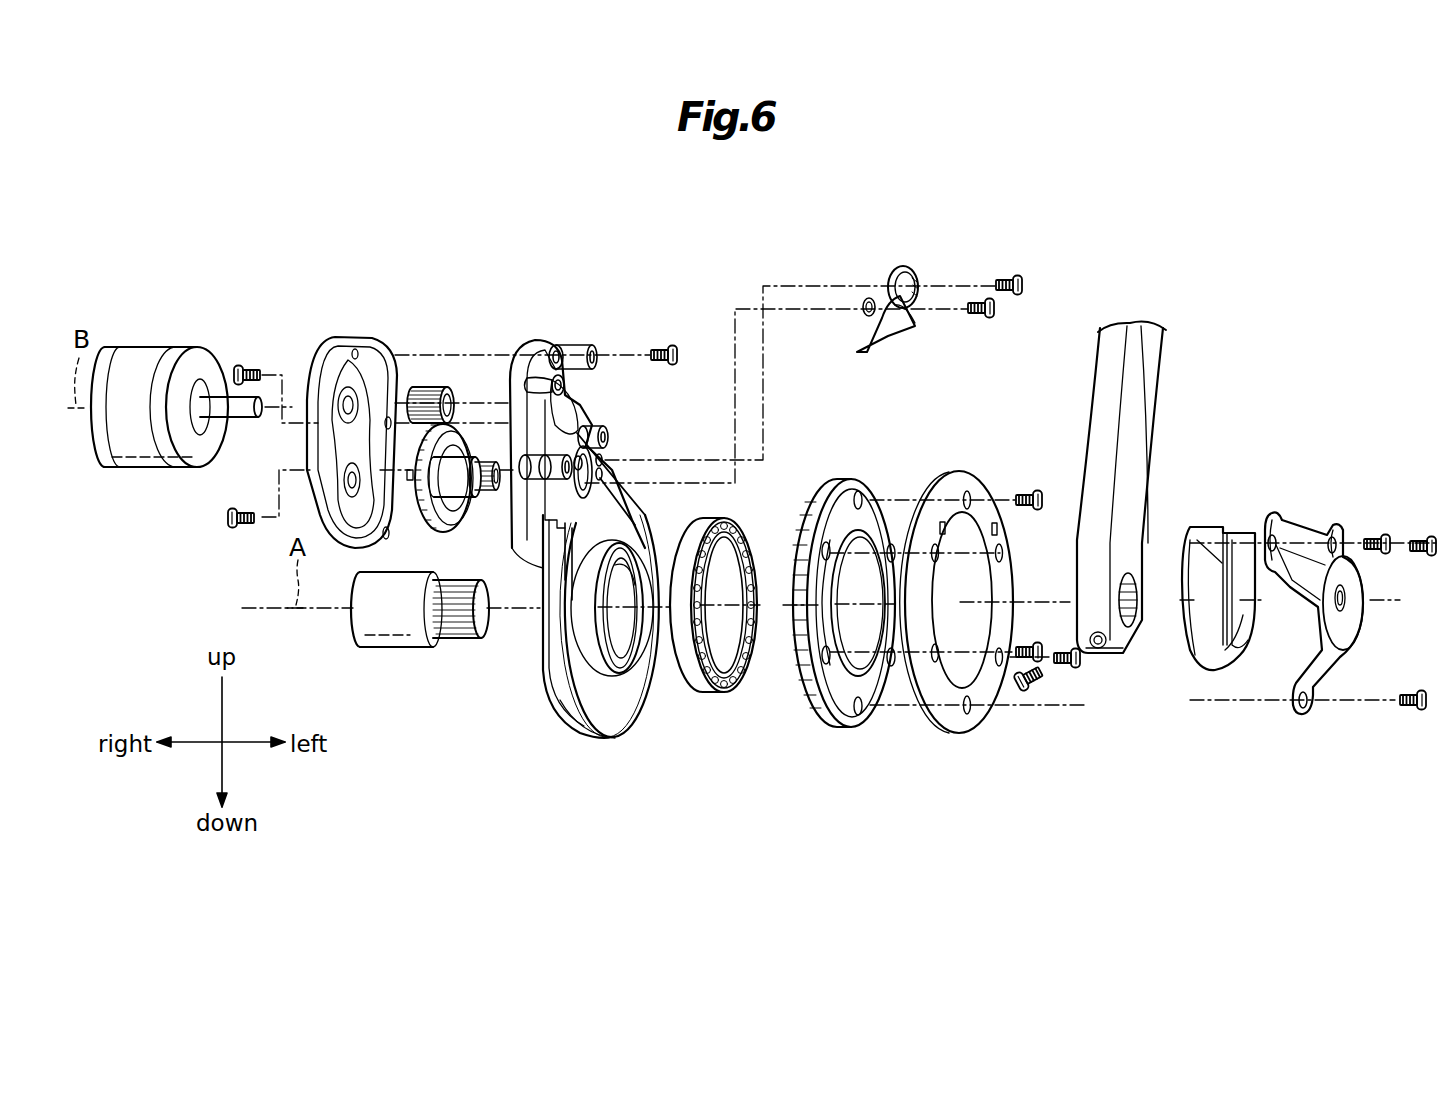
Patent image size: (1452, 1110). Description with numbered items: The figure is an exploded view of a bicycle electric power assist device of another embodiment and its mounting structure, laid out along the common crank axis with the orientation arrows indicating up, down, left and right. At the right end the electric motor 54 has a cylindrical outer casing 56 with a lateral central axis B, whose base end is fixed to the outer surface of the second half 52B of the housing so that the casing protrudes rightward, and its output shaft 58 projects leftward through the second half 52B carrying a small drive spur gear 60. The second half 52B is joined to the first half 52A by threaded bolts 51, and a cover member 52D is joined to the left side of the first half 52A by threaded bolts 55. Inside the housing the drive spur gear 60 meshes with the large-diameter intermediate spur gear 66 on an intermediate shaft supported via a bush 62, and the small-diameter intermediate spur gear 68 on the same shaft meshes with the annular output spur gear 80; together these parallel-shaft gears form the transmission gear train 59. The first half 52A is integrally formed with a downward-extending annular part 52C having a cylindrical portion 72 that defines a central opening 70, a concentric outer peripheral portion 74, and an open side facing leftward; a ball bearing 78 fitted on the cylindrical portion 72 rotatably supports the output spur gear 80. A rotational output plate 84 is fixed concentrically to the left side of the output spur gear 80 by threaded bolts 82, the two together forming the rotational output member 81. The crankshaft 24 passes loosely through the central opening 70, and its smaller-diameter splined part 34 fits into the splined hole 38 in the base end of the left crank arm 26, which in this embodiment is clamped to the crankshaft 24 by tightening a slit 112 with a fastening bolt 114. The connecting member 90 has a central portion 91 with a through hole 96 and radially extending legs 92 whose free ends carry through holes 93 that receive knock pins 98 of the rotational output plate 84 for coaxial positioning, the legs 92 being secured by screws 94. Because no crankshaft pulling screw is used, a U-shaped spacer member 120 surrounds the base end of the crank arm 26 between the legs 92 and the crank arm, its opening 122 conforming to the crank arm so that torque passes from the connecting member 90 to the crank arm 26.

The crankshaft 24 is at (388, 642).
The left crank arm 26 is at (1148, 408).
The splined part 34 is at (457, 628).
The splined hole 38 is at (1135, 585).
The threaded bolt 51 is at (244, 367).
The first half 52A is at (548, 338).
The second half 52B is at (320, 346).
The annular part 52C is at (557, 695).
The cover member 52D is at (890, 273).
The electric motor 54 is at (156, 348).
The threaded bolt 55 is at (1022, 284).
The outer casing 56 is at (170, 455).
The output shaft 58 is at (238, 416).
The transmission gear train 59 is at (428, 357).
The drive spur gear 60 is at (435, 392).
The bush 62 is at (462, 448).
The intermediate spur gear 66 is at (435, 535).
The intermediate spur gear 68 is at (480, 504).
The central opening 70 is at (628, 573).
The cylindrical portion 72 is at (607, 677).
The outer peripheral portion 74 is at (577, 730).
The ball bearing 78 is at (705, 685).
The output spur gear 80 is at (840, 480).
The rotational output member 81 is at (985, 748).
The threaded bolt 82 is at (1032, 490).
The rotational output plate 84 is at (957, 485).
The connecting member 90 is at (1358, 655).
The central portion 91 is at (1346, 592).
The leg 92 is at (1336, 533).
The through hole 93 is at (1327, 523).
The screw 94 is at (1421, 533).
The through hole 96 is at (1351, 613).
The knock pin 98 is at (941, 530).
The slit 112 is at (1125, 660).
The fastening bolt 114 is at (1024, 690).
The spacer member 120 is at (1215, 675).
The opening 122 is at (1232, 665).